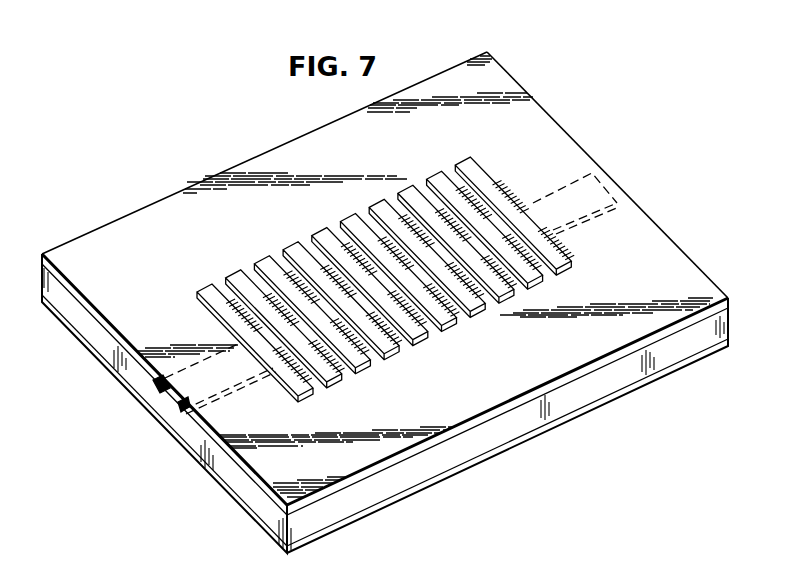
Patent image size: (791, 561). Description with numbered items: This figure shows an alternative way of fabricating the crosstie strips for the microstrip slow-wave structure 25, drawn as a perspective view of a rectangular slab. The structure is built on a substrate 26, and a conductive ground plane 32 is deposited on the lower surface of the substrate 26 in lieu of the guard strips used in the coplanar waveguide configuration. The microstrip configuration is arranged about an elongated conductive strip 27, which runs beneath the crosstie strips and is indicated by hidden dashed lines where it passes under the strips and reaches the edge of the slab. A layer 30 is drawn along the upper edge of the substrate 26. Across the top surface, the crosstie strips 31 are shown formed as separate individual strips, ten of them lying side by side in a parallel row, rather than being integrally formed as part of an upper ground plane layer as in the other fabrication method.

The microstrip slow-wave structure 25 is at (562, 106).
The substrate 26 is at (613, 373).
The elongated conductive strip 27 is at (160, 386).
The sensing film layer 30 is at (48, 273).
The crosstie strips 31 is at (198, 292).
The conductive ground plane 32 is at (197, 458).